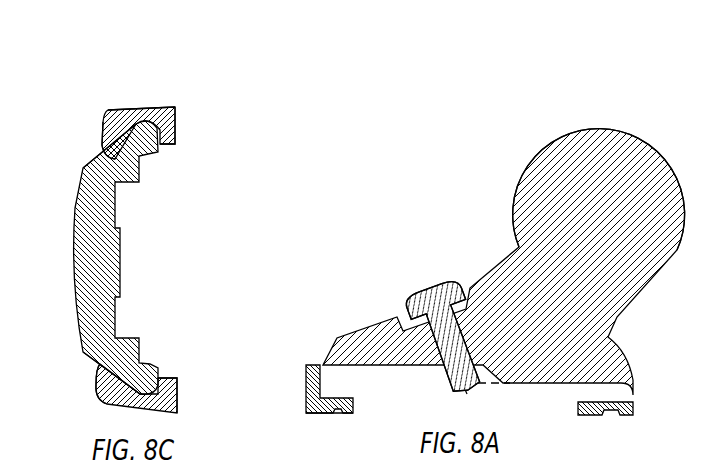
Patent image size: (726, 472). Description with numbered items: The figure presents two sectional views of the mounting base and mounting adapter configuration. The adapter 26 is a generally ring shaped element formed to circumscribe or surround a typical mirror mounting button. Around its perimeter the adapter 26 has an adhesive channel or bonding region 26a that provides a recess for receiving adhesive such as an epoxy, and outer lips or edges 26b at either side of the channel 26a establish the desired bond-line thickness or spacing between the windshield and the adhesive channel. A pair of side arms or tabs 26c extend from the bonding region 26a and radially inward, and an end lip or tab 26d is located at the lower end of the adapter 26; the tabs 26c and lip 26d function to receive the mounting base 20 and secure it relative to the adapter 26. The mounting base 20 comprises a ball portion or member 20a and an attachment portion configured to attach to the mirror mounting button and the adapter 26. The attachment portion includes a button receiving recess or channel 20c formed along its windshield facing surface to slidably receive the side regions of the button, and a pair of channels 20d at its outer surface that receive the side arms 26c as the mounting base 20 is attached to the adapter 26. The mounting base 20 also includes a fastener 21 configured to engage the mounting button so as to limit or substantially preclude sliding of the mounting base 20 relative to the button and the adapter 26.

In FIG. 8A, the mounting base 20 is at (474, 218).
In FIG. 8A, the ball portion 20a is at (633, 140).
In FIG. 8C, the button receiving channel 20c is at (147, 154).
In FIG. 8C, the channels 20d is at (112, 158).
In FIG. 8A, the fastener 21 is at (424, 293).
In FIG. 8C, the adapter 26 is at (143, 70).
In FIG. 8C, the adhesive channel 26a is at (176, 127).
In FIG. 8A, the adhesive channel 26a is at (323, 417).
In FIG. 8C, the outer lips 26b is at (173, 107).
In FIG. 8C, the side arms 26c is at (102, 142).
In FIG. 8A, the end lip 26d is at (307, 365).